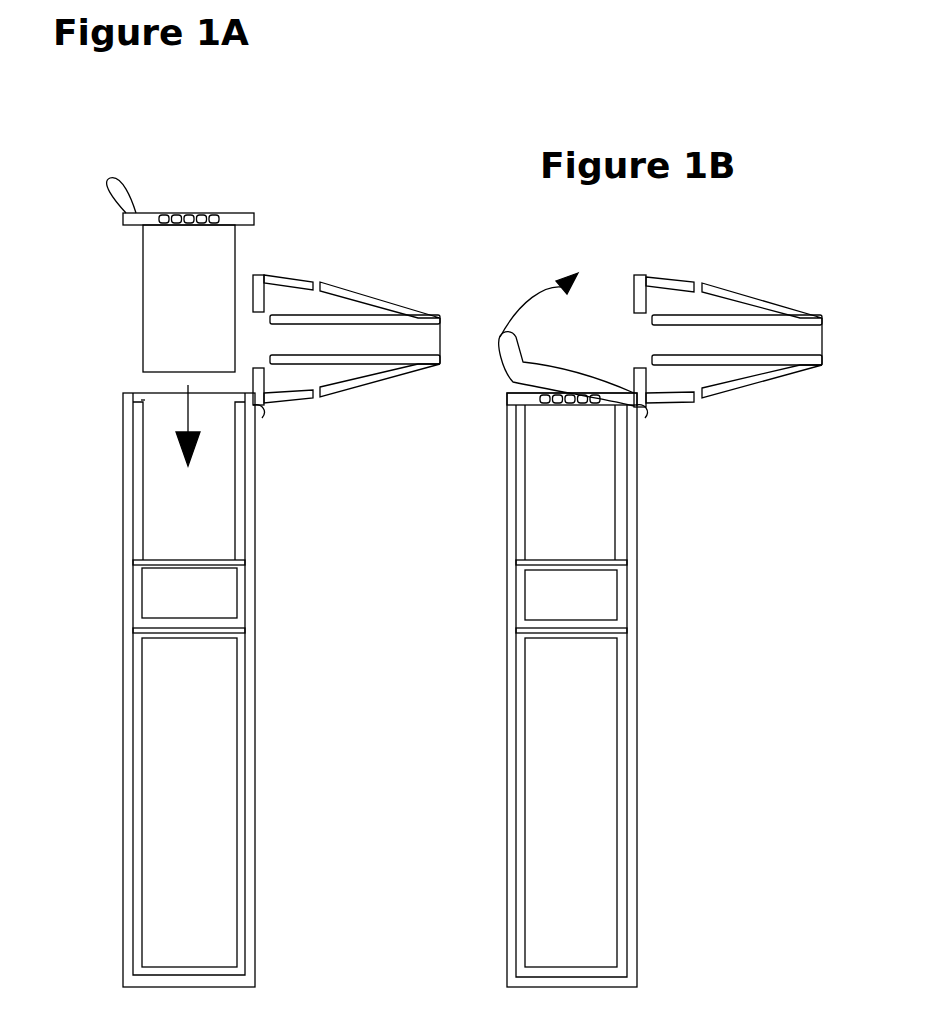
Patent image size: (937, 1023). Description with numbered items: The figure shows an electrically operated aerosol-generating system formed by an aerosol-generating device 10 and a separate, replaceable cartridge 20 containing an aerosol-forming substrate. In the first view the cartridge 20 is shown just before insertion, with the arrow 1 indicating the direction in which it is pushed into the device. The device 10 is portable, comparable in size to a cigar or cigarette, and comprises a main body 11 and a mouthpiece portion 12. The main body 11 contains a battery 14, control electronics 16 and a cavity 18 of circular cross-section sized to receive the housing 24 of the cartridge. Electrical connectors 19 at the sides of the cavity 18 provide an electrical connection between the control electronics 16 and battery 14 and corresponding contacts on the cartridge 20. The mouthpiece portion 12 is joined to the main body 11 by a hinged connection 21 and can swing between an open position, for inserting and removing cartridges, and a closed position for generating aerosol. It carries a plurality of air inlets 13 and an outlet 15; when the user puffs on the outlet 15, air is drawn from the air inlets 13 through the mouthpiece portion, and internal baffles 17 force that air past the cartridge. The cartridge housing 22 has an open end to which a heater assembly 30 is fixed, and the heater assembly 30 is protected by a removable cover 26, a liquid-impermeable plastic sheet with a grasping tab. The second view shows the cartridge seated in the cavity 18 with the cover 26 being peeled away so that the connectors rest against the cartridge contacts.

In FIG. 1A, the arrow 1 is at (188, 422).
In FIG. 1A, the aerosol-generating device 10 is at (114, 734).
In FIG. 1B, the aerosol-generating device 10 is at (494, 736).
In FIG. 1A, the main body 11 is at (255, 533).
In FIG. 1A, the mouthpiece portion 12 is at (375, 290).
In FIG. 1B, the mouthpiece portion 12 is at (755, 290).
In FIG. 1A, the air inlets 13 is at (317, 280).
In FIG. 1B, the air inlets 13 is at (698, 280).
In FIG. 1A, the battery 14 is at (208, 830).
In FIG. 1B, the battery 14 is at (592, 830).
In FIG. 1A, the outlet 15 is at (443, 338).
In FIG. 1A, the control electronics 16 is at (170, 598).
In FIG. 1B, the control electronics 16 is at (553, 598).
In FIG. 1A, the internal baffles 17 is at (352, 362).
In FIG. 1A, the cavity 18 is at (178, 522).
In FIG. 1A, the electrical connectors 19 is at (137, 485).
In FIG. 1B, the electrical connectors 19 is at (622, 478).
In FIG. 1A, the cartridge 20 is at (122, 312).
In FIG. 1B, the cartridge 20 is at (560, 522).
In FIG. 1A, the hinged connection 21 is at (265, 412).
In FIG. 1B, the hinged connection 21 is at (650, 412).
In FIG. 1A, the housing 22 is at (178, 270).
In FIG. 1A, the housing 24 is at (238, 254).
In FIG. 1A, the cover 26 is at (178, 212).
In FIG. 1B, the cover 26 is at (566, 383).
In FIG. 1A, the heater assembly 30 is at (229, 212).